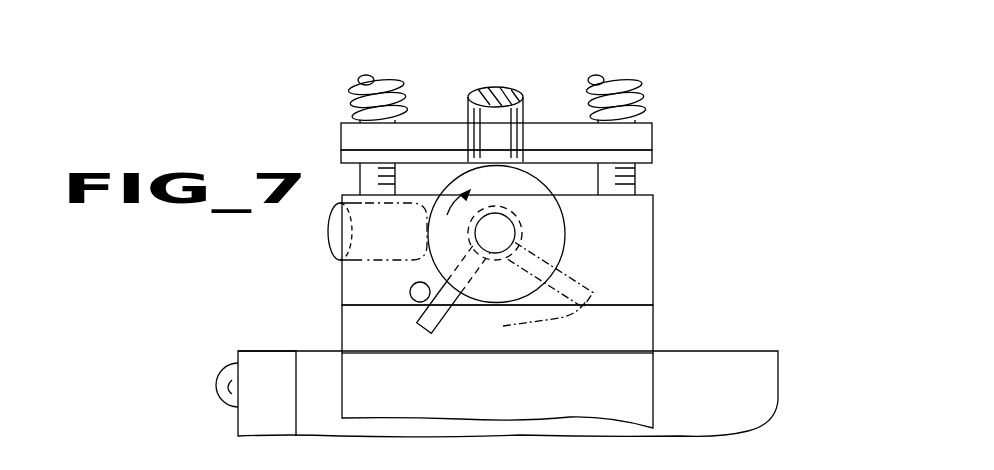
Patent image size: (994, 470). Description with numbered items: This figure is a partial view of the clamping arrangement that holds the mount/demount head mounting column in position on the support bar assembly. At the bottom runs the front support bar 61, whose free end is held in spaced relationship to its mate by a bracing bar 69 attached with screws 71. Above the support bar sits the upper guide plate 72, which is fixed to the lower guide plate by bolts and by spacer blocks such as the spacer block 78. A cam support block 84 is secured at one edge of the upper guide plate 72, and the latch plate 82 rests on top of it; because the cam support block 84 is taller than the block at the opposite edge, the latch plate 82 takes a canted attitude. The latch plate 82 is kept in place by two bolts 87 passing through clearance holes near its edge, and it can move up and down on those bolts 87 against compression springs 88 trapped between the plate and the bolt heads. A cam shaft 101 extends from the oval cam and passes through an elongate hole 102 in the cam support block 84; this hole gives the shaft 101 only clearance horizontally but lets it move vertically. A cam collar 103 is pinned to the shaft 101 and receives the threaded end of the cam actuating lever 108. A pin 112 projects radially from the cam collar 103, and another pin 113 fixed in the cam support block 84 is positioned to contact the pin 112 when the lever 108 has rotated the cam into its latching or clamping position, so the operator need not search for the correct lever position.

The front support bar 61 is at (770, 372).
The bracing bar 69 is at (262, 355).
The screws 71 is at (218, 383).
The upper guide plate 72 is at (643, 335).
The spacer block 78 is at (643, 387).
The latch plate 82 is at (654, 142).
The cam support block 84 is at (653, 265).
The bolts 87 is at (370, 80).
The compression springs 88 is at (350, 92).
The cam shaft 101 is at (494, 216).
The elongate hole 102 is at (550, 253).
The cam collar 103 is at (552, 222).
The cam actuating lever 108 is at (490, 90).
The pin 112 is at (436, 326).
The pin 113 is at (412, 287).